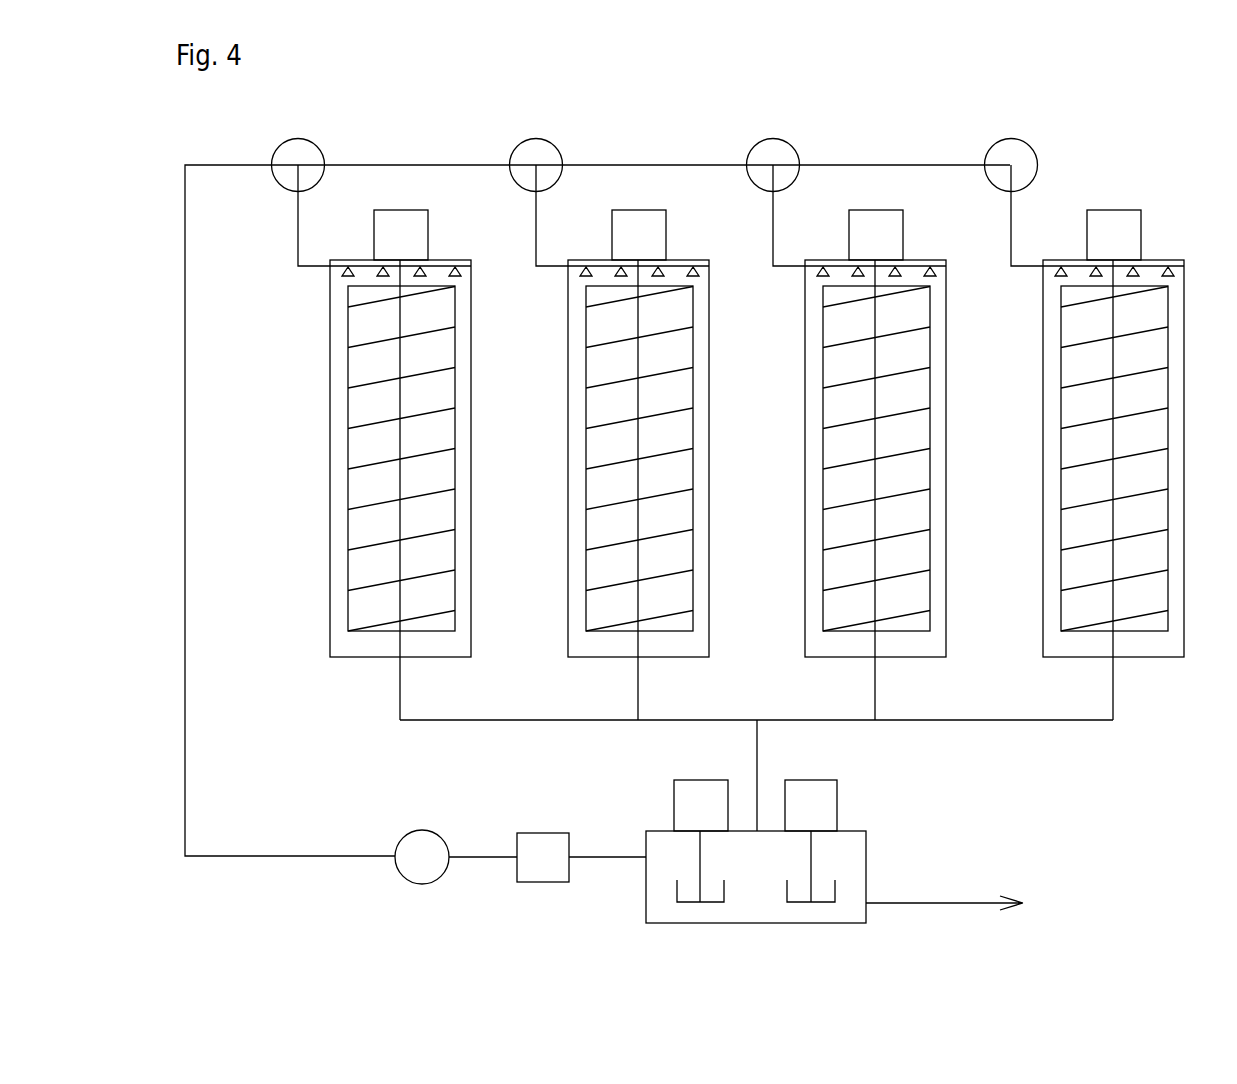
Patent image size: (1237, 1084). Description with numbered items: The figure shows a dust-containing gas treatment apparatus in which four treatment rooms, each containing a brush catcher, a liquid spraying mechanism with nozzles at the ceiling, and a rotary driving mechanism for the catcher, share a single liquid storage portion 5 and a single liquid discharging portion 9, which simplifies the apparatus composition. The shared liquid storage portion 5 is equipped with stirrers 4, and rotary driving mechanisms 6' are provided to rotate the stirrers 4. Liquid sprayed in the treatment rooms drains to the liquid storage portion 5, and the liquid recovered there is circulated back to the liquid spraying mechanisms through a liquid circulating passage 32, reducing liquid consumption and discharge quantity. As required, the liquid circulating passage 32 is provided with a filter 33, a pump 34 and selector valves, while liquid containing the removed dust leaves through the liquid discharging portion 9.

The stirrer 4 is at (688, 903).
The liquid storage portion 5 is at (645, 896).
The rotary driving mechanism 6' is at (759, 805).
The liquid discharging portion 9 is at (954, 904).
The liquid circulating passage 32 is at (185, 719).
The filter 33 is at (533, 832).
The pump 34 is at (427, 831).